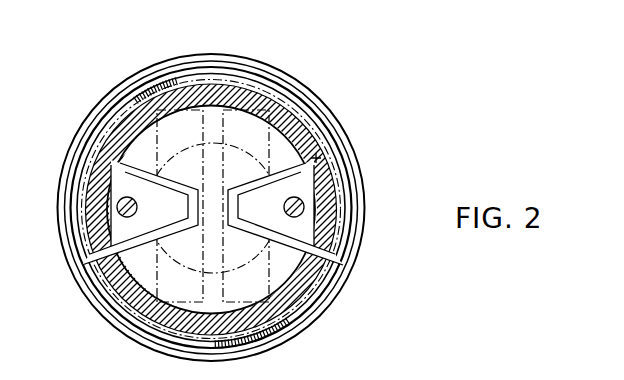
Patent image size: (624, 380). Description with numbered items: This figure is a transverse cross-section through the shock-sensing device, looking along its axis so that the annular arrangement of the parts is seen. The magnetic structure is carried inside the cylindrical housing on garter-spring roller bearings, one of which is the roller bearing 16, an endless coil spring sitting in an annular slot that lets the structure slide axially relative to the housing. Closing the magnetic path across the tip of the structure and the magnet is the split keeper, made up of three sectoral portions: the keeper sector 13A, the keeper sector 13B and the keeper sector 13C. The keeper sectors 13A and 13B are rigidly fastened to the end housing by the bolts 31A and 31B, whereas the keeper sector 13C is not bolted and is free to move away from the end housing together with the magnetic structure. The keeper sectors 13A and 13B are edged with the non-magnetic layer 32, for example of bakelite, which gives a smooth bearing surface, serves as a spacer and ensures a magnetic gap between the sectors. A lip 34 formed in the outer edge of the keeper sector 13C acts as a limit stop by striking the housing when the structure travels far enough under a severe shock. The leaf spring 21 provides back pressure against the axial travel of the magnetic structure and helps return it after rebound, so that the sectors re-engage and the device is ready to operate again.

The keeper sector 13A is at (100, 150).
The keeper sector 13B is at (305, 118).
The keeper sector 13C is at (284, 270).
The roller bearing 16 is at (156, 86).
The leaf spring 21 is at (203, 126).
The bolt 31A is at (133, 216).
The bolt 31B is at (302, 213).
The non-magnetic layer 32 is at (318, 156).
The lip 34 is at (245, 73).